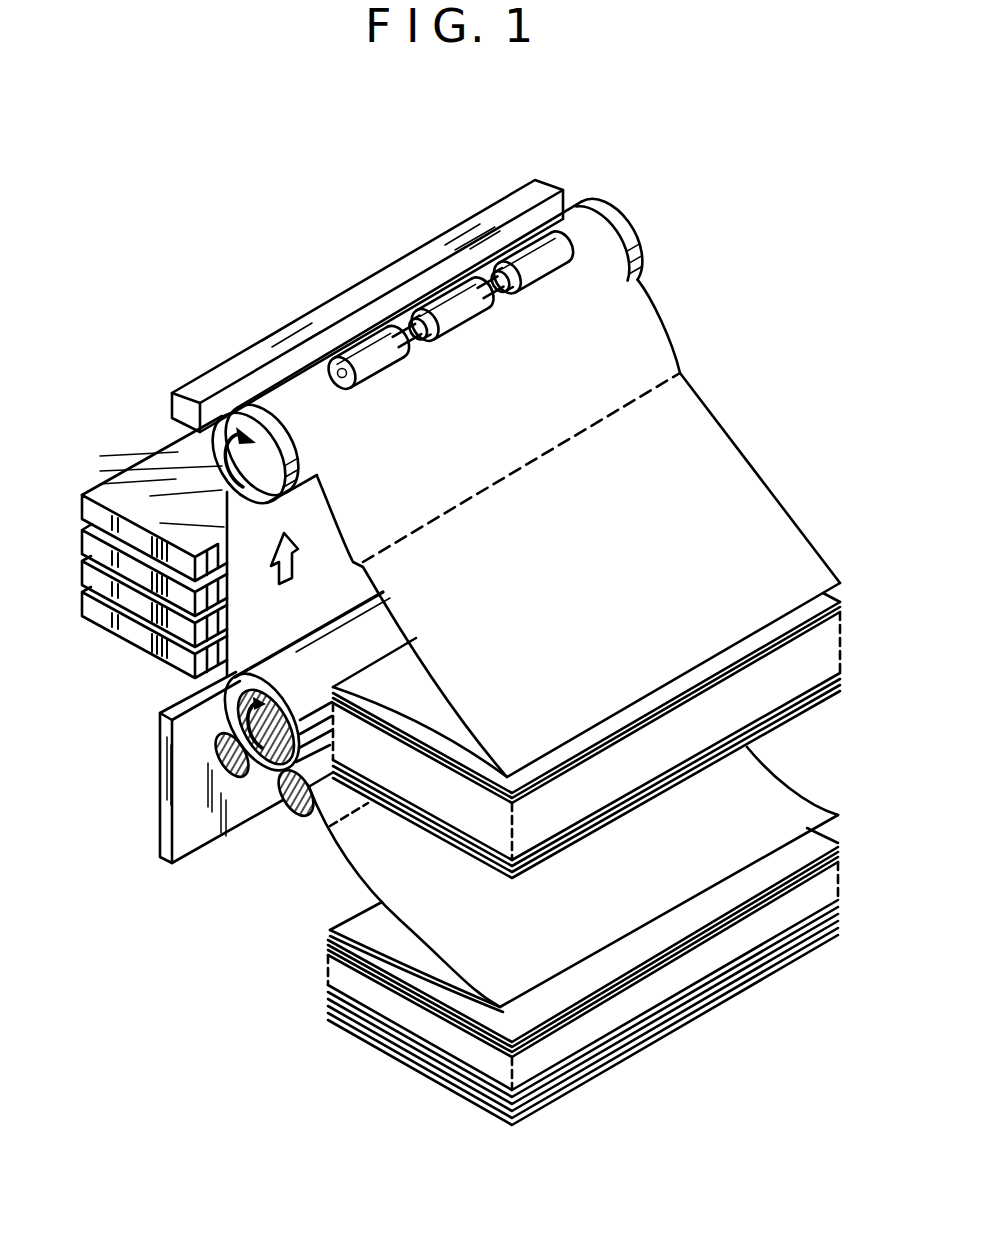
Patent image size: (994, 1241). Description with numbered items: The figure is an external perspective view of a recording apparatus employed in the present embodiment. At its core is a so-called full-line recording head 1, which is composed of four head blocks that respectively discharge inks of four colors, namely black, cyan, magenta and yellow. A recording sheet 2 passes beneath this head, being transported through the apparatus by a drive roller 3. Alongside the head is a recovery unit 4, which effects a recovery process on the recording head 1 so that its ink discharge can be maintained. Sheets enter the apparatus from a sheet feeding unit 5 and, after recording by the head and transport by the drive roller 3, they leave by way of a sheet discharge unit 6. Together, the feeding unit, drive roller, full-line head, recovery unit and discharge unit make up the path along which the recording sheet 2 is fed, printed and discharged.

The recording head 1 is at (66, 488).
The recording sheet 2 is at (233, 510).
The drive roller 3 is at (276, 462).
The recovery unit 4 is at (158, 818).
The sheet feeding unit 5 is at (852, 805).
The sheet discharge unit 6 is at (852, 567).